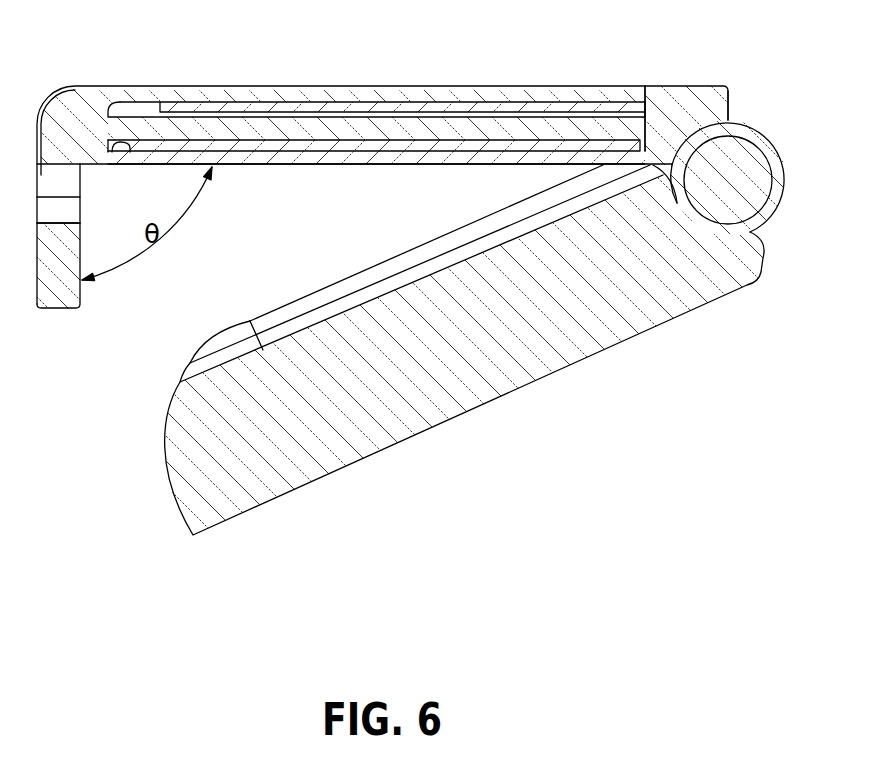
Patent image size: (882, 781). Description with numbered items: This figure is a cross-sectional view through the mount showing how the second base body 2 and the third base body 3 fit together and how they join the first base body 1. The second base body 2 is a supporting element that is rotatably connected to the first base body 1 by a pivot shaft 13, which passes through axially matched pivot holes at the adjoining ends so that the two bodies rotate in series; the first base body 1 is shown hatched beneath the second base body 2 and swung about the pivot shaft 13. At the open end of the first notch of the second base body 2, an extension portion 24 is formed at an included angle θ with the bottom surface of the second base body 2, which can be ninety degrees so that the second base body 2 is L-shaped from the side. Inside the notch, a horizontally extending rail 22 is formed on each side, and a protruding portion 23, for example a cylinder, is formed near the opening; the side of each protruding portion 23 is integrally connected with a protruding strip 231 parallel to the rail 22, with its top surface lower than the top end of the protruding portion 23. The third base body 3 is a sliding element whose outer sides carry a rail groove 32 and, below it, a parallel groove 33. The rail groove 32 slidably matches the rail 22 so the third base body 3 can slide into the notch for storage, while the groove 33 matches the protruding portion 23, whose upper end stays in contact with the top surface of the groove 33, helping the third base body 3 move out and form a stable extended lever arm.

The first base body 1 is at (437, 387).
The second base body 2 is at (681, 113).
The third base body 3 is at (95, 105).
The pivot shaft 13 is at (730, 175).
The rail 22 is at (317, 109).
The protruding portion 23 is at (120, 152).
The extension portion 24 is at (58, 292).
The rail groove 32 is at (140, 112).
The groove 33 is at (473, 145).
The protruding strip 231 is at (311, 162).